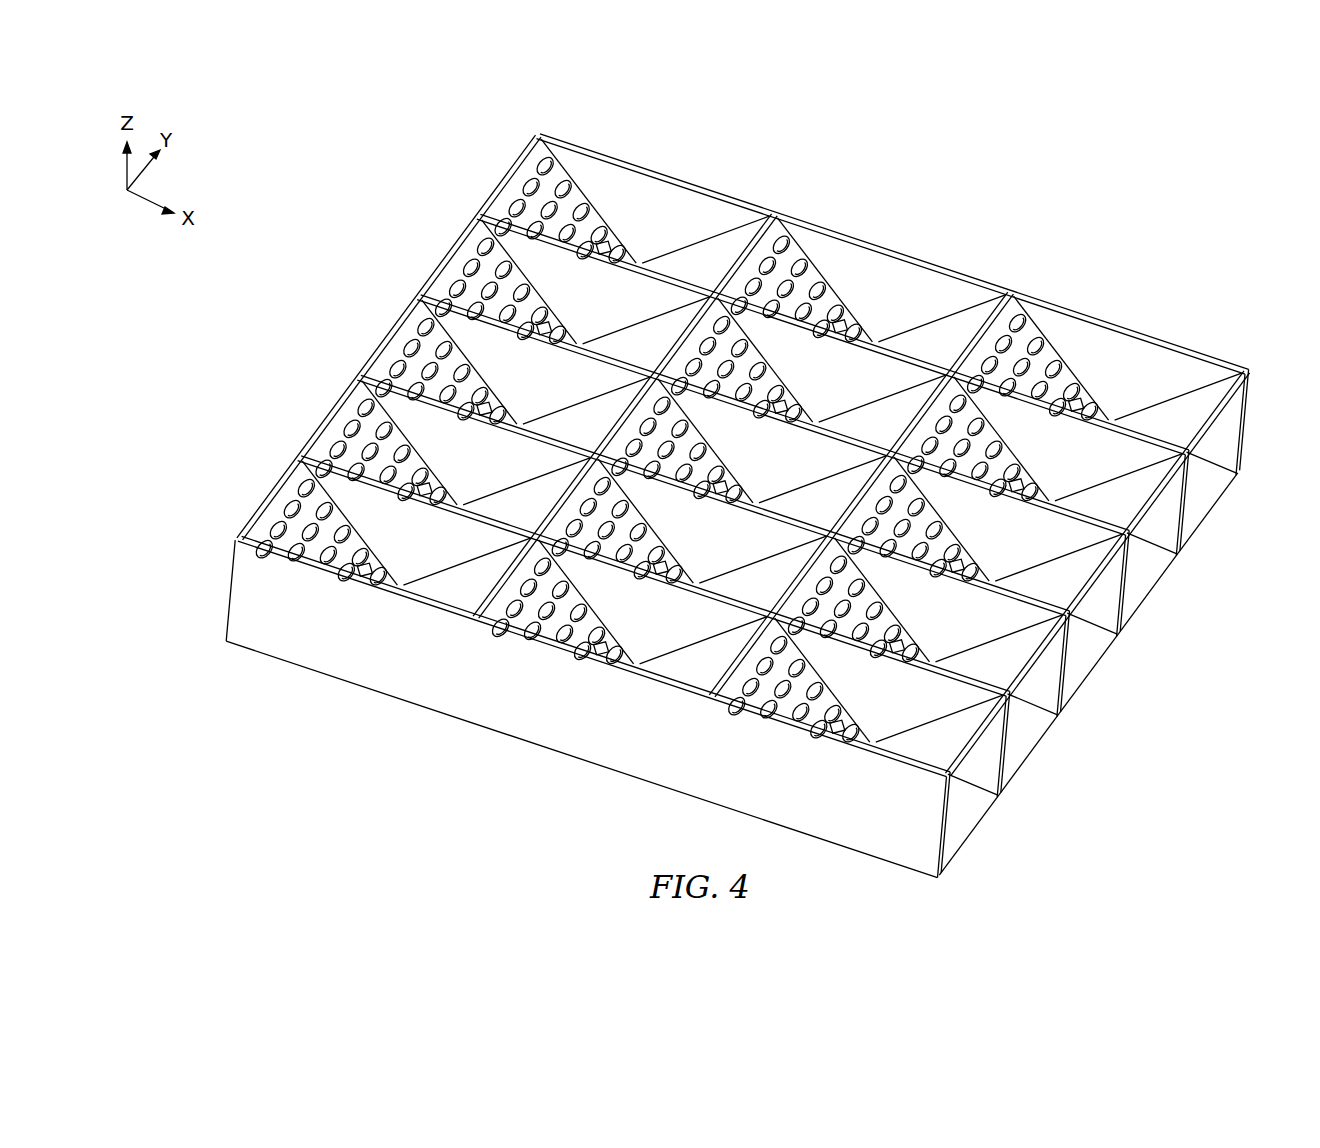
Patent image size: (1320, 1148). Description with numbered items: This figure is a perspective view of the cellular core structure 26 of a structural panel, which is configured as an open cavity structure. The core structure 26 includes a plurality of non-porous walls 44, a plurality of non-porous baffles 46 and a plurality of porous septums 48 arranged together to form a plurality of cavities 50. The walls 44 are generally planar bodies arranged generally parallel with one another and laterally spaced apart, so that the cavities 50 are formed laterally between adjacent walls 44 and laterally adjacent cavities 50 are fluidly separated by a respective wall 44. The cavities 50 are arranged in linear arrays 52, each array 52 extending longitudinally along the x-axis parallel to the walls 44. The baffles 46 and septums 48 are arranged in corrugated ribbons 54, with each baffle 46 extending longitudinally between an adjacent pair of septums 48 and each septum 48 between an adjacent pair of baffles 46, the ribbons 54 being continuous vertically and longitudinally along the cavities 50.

The cellular core structure 26 is at (1118, 204).
The non-porous wall 44 is at (1215, 365).
The non-porous baffle 46 is at (720, 245).
The porous septum 48 is at (562, 173).
The cavity 50 is at (643, 204).
The linear array 52 is at (475, 162).
The corrugated ribbon 54 is at (500, 190).